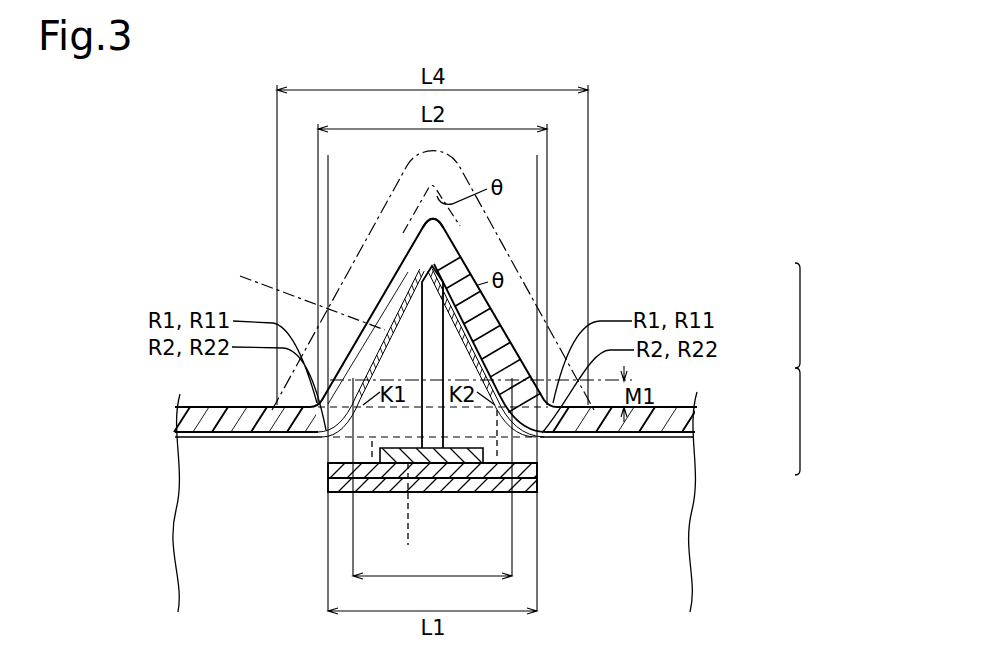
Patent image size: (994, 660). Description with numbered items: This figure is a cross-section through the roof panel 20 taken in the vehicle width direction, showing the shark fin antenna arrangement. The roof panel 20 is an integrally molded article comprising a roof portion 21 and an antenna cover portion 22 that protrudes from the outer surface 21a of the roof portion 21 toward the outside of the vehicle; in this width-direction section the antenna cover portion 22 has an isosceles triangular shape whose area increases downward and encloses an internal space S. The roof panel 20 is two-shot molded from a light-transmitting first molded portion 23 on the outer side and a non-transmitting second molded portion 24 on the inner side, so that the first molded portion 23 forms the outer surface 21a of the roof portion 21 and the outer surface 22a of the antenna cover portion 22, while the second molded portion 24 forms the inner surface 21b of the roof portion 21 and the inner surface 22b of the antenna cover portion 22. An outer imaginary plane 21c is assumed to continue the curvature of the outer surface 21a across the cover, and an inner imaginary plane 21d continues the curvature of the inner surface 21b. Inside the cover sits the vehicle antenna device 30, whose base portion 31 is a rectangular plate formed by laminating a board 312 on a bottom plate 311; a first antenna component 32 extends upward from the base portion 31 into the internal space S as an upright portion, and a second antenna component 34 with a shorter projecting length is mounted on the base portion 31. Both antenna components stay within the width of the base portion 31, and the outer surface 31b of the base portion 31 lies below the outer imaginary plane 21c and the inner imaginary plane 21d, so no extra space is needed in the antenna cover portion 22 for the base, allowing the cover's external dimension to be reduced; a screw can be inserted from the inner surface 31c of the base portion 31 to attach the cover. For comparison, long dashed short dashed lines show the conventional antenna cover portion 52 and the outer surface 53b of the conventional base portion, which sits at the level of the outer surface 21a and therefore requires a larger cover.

The roof panel 20 is at (655, 186).
The roof portion 21 is at (250, 403).
The outer surface of the roof portion 21a is at (200, 403).
The inner surface of the roof portion 21b is at (205, 440).
The outer imaginary plane 21c is at (432, 491).
The inner imaginary plane 21d is at (384, 504).
The antenna cover portion 22 is at (480, 257).
The outer surface of the antenna cover portion 22a is at (390, 277).
The inner surface of the antenna cover portion 22b is at (380, 330).
The first molded portion 23 is at (412, 238).
The second molded portion 24 is at (605, 436).
The vehicle antenna device 30 is at (815, 369).
The base portion 31 is at (524, 479).
The outer surface of the base portion 31b is at (502, 462).
The inner surface of the base portion 31c is at (372, 441).
The first antenna component 32 is at (448, 341).
The second antenna component 34 is at (471, 463).
The antenna cover portion of the conventional technique 52 is at (483, 224).
The outer surface of the conventional base portion 53b is at (289, 297).
The bottom plate 311 is at (537, 484).
The board 312 is at (328, 471).
The internal space S is at (440, 322).